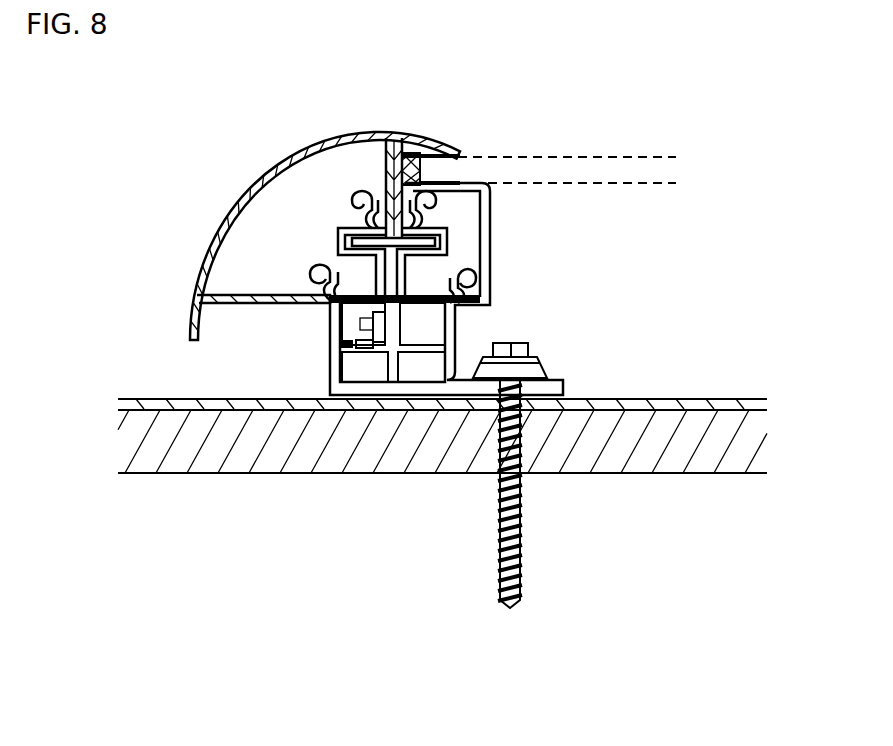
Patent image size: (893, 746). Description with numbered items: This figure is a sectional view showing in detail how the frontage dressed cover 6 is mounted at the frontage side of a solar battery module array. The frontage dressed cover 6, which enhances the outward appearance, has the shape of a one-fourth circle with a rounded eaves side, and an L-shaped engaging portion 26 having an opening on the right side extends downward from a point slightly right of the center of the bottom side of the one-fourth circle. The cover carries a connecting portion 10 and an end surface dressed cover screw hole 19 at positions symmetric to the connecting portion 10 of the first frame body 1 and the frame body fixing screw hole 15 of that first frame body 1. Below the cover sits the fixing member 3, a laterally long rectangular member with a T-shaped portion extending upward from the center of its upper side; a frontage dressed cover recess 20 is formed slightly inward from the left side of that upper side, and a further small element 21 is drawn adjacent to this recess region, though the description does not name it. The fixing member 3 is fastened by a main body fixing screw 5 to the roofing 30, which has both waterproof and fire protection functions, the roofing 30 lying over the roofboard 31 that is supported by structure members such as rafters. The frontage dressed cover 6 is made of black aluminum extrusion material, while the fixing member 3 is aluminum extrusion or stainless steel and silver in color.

The first frame body 1 is at (403, 200).
The fixing member 3 is at (452, 360).
The main body fixing screw 5 is at (518, 537).
The frontage dressed cover 6 is at (237, 210).
The connecting portion 10 is at (343, 238).
The frame body fixing screw hole 15 is at (420, 205).
The end surface dressed cover screw hole 19 is at (360, 197).
The frontage dressed cover recess 20 is at (345, 343).
The holding piece 21 is at (375, 330).
The L-shaped engaging portion 26 is at (360, 350).
The roofing 30 is at (640, 405).
The roofboard 31 is at (230, 447).